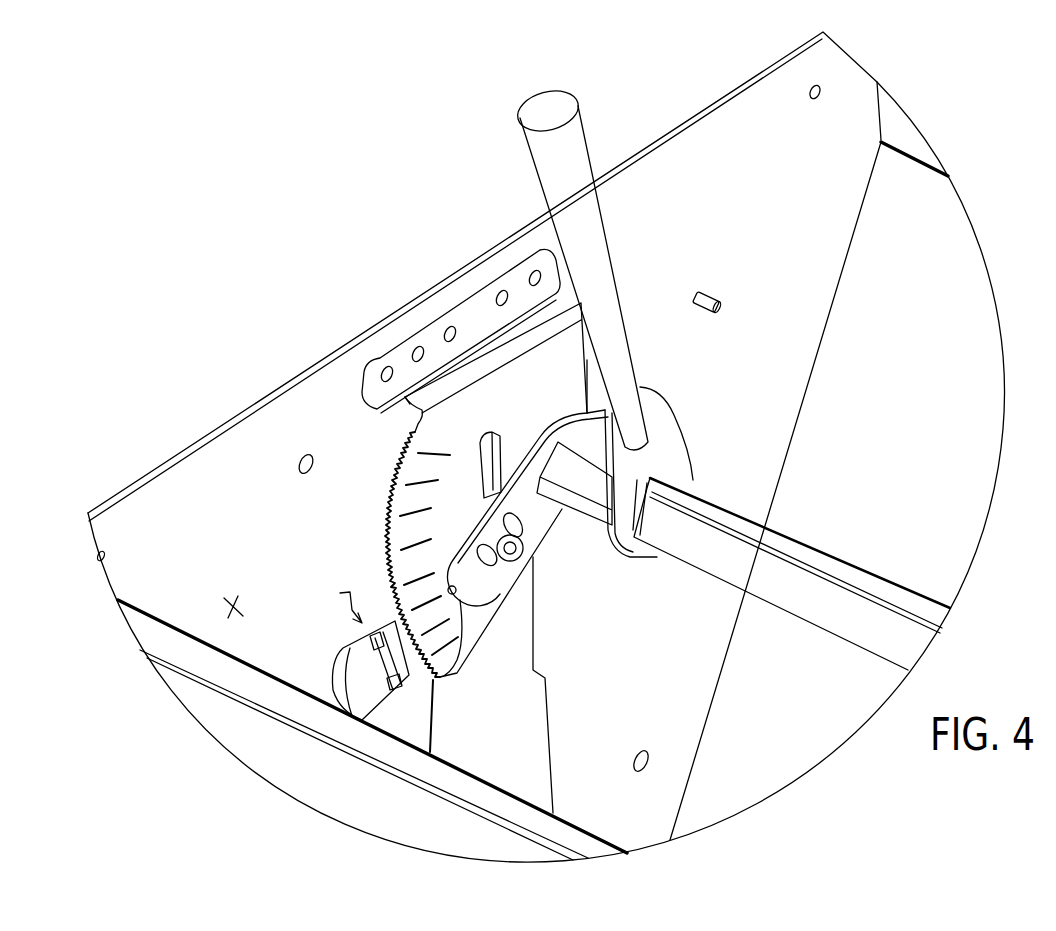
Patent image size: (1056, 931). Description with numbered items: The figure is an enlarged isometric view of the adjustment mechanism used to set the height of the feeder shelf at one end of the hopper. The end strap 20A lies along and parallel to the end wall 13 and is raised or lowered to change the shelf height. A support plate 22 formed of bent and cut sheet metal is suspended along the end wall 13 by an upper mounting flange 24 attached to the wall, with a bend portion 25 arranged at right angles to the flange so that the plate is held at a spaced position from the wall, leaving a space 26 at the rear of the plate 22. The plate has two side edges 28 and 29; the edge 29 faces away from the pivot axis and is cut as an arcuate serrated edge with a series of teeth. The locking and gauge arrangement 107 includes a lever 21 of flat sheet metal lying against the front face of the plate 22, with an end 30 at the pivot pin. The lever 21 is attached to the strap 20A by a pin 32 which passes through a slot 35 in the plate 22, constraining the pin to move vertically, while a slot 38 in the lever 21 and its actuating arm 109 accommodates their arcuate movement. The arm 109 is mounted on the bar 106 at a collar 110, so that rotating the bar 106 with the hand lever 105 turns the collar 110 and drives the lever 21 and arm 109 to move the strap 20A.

The end wall 13 is at (305, 555).
The end strap 20A is at (538, 737).
The lever 21 is at (350, 645).
The support plate 22 is at (440, 426).
The upper mounting flange 24 is at (363, 392).
The bend portion 25 is at (477, 378).
The space 26 is at (387, 421).
The side edge 28 is at (585, 358).
The side edge 29 is at (386, 532).
The end 30 is at (337, 609).
The pin 32 is at (483, 592).
The slot 35 is at (500, 433).
The slot 38 is at (522, 527).
The lever 105 is at (627, 368).
The bar 106 is at (703, 503).
The locking and gauge arrangement 107 is at (562, 639).
The actuating arm 109 is at (464, 716).
The collar 110 is at (588, 462).